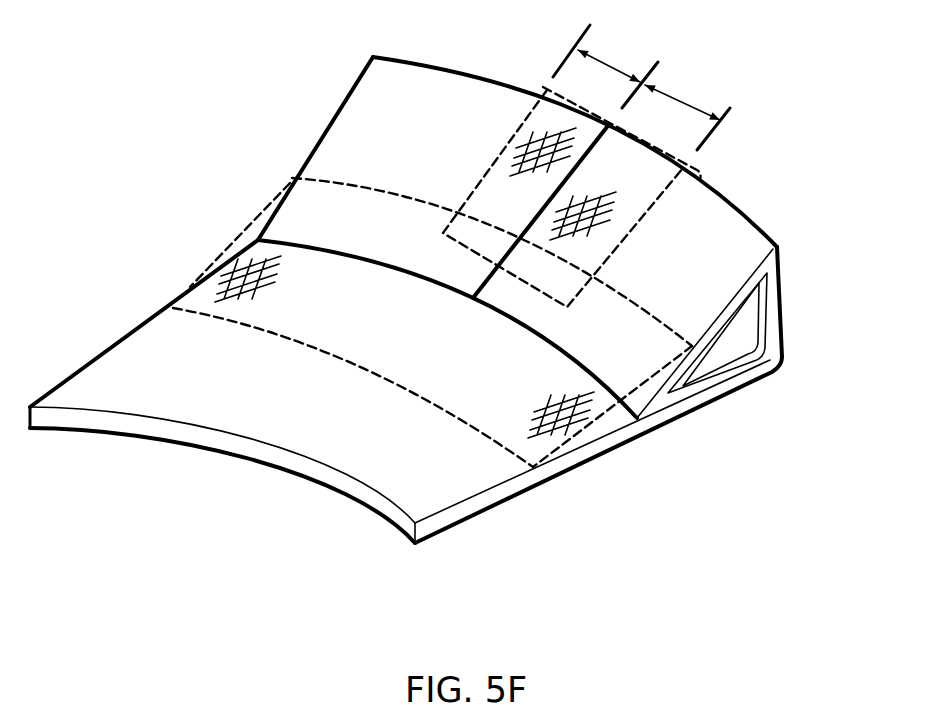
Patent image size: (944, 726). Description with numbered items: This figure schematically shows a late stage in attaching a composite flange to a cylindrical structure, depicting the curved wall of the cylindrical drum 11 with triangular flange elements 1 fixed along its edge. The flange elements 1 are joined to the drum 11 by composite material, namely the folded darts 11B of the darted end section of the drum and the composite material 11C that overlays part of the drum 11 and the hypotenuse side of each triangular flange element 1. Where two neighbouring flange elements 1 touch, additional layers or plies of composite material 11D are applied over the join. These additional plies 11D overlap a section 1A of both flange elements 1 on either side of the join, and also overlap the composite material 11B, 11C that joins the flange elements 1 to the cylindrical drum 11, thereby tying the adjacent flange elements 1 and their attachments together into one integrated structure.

The flange element 1 is at (450, 77).
The section of flange element 1A is at (586, 166).
The cylindrical drum 11 is at (238, 447).
The dart 11B is at (783, 343).
The composite material 11C is at (242, 232).
The additional layers of composite material 11D is at (497, 185).